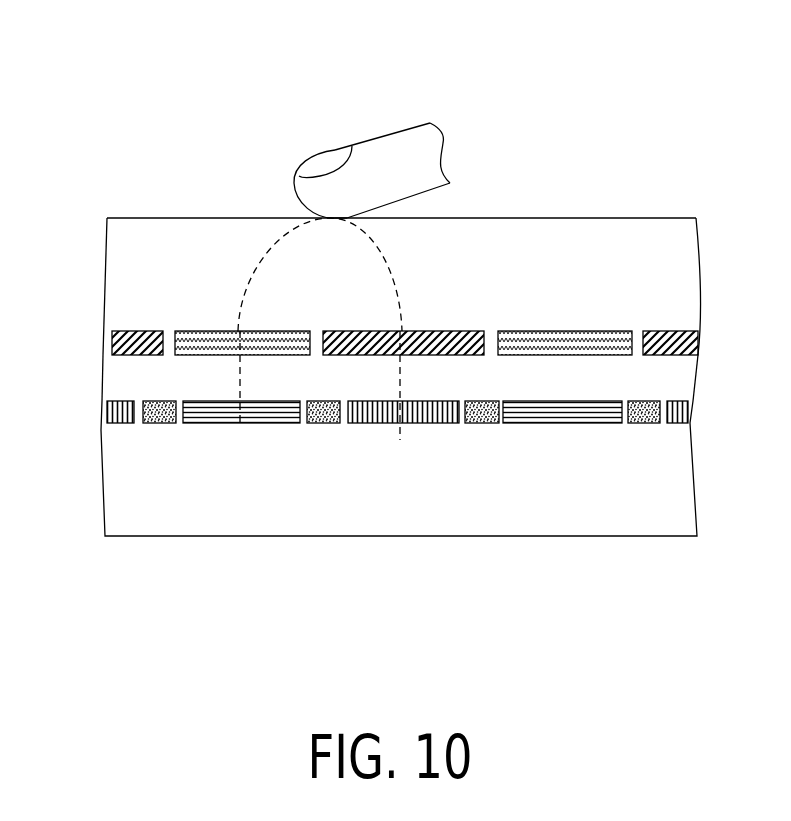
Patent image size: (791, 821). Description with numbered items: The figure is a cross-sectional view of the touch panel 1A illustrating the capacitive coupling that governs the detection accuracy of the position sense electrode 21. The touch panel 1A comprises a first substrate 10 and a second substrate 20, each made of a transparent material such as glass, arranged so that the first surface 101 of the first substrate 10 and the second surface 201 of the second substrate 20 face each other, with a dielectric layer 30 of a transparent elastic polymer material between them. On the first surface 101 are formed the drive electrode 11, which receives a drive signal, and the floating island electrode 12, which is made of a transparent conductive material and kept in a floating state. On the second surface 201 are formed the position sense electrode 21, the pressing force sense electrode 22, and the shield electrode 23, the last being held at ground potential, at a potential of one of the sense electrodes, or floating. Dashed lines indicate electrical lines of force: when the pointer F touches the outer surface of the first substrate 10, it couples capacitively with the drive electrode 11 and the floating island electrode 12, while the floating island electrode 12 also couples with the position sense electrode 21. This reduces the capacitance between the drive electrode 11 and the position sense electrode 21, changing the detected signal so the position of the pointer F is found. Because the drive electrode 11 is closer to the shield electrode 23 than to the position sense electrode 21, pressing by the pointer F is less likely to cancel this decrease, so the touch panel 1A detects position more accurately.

The first substrate 10 is at (650, 238).
The second substrate 20 is at (548, 513).
The dielectric layer 30 is at (127, 371).
The drive electrode 11 is at (442, 331).
The floating island electrode 12 is at (217, 331).
The first surface 101 is at (650, 355).
The second surface 201 is at (120, 398).
The position sense electrode 21 is at (222, 425).
The pressing force sense electrode 22 is at (402, 425).
The shield electrode 23 is at (320, 425).
The pointer F is at (393, 157).
The touch panel 1A is at (694, 641).